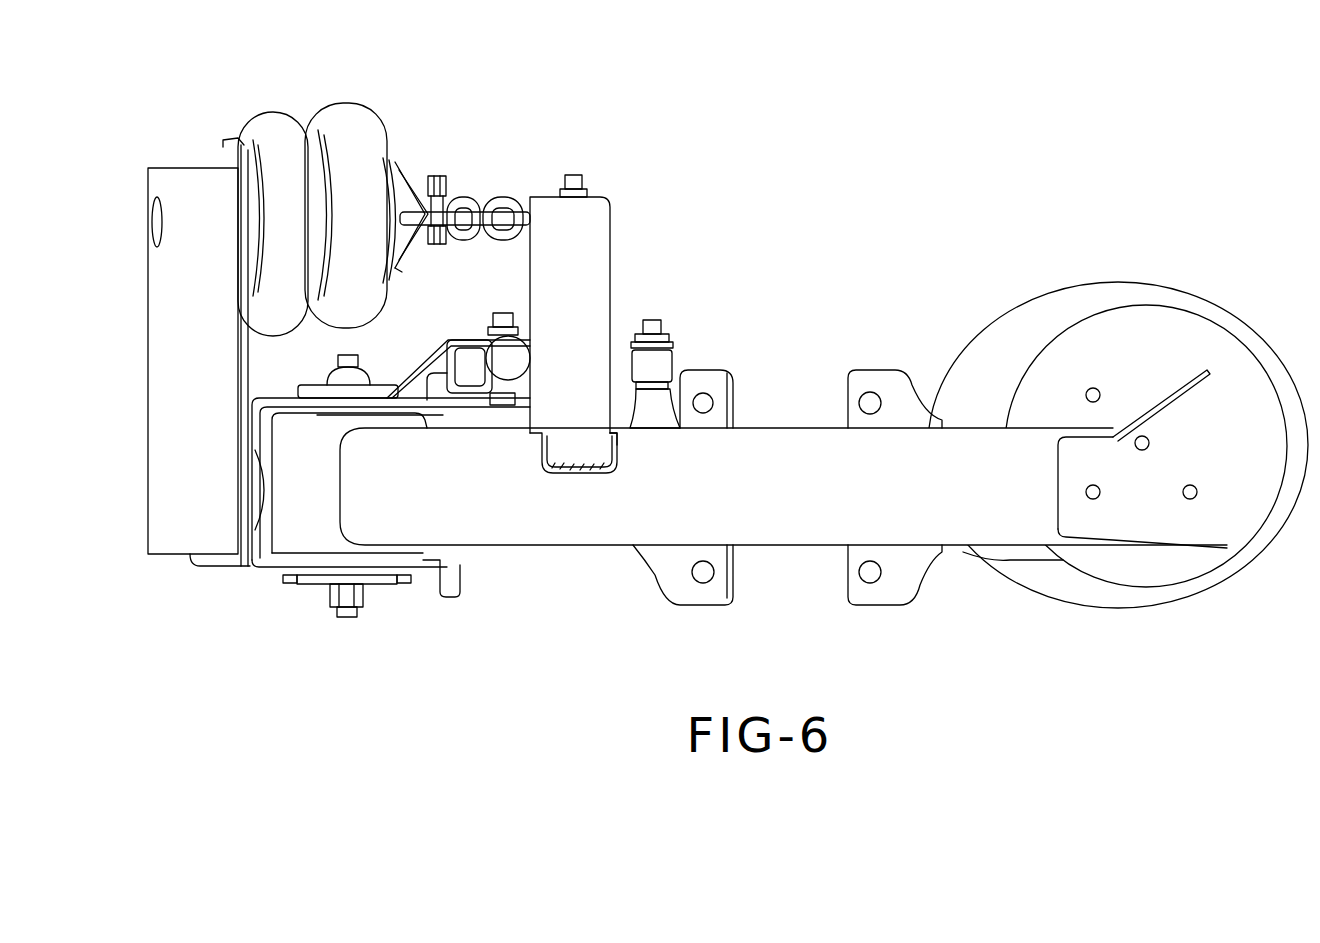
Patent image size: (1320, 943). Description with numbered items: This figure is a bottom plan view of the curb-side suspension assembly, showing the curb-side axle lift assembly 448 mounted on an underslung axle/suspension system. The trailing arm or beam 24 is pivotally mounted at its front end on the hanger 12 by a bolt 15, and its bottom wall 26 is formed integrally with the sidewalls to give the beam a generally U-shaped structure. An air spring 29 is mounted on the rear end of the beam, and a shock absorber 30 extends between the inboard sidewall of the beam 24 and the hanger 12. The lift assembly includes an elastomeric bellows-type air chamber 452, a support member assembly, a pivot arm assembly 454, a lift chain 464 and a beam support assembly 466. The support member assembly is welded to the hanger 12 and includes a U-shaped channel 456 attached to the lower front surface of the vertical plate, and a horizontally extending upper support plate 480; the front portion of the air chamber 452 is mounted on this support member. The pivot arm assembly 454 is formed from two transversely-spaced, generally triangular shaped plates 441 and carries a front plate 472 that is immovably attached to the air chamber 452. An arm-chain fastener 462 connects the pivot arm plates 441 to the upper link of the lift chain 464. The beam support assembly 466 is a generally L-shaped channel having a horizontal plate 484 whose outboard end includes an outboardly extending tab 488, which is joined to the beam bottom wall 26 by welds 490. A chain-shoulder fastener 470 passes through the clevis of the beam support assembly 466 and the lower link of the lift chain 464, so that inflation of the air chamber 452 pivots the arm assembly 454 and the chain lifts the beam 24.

The U-shaped channel 456 is at (180, 168).
The curb-side axle lift assembly 448 is at (178, 592).
The air chamber 452 is at (330, 108).
The front plate 472 is at (391, 158).
The pivot arm assembly 454 is at (410, 165).
The triangular shaped plates 441 is at (408, 262).
The arm-chain fastener 462 is at (447, 176).
The lift chain 464 is at (511, 196).
The beam support assembly 466 is at (610, 243).
The chain-shoulder fastener 470 is at (575, 175).
The tab 488 is at (572, 450).
The welds 490 is at (614, 452).
The horizontal plate 484 is at (612, 305).
The upper support plate 480 is at (262, 370).
The shock absorber 30 is at (496, 371).
The hanger 12 is at (247, 565).
The bolt 15 is at (352, 618).
The beam 24 is at (558, 550).
The bottom wall 26 is at (898, 492).
The air spring 29 is at (1070, 608).